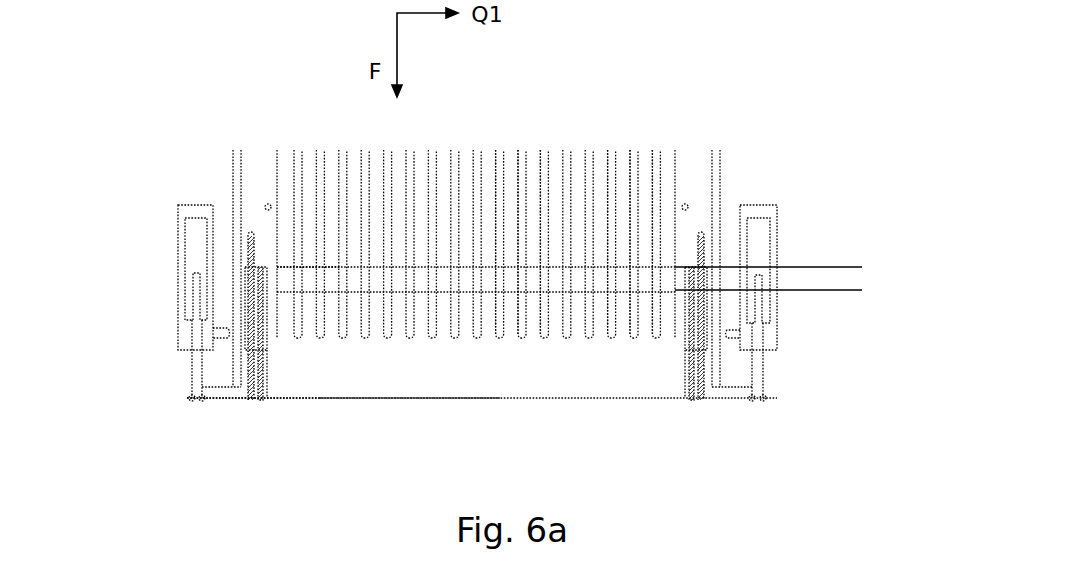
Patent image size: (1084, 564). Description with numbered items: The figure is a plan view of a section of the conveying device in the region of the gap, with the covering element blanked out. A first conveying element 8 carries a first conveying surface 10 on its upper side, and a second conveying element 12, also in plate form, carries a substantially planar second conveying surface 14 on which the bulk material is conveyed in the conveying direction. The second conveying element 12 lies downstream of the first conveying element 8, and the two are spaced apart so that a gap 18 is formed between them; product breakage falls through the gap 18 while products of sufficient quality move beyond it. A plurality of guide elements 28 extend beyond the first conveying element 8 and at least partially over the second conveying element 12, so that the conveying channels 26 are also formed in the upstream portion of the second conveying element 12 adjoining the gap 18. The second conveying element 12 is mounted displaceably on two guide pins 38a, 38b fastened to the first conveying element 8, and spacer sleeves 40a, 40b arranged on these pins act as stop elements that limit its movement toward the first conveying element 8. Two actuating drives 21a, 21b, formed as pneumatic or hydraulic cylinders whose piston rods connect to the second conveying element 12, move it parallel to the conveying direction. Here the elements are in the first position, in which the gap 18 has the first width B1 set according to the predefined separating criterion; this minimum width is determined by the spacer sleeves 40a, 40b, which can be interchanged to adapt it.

The first conveying element 8 is at (232, 158).
The first conveying surface 10 is at (313, 159).
The second conveying element 12 is at (280, 398).
The second conveying surface 14 is at (342, 378).
The gap 18 is at (300, 277).
The conveying channels 26 is at (488, 168).
The guide elements 28 is at (612, 168).
The actuating drive 21a is at (185, 333).
The actuating drive 21b is at (767, 337).
The guide pin 38a is at (253, 322).
The guide pin 38b is at (697, 342).
The spacer sleeve 40a is at (243, 278).
The spacer sleeve 40b is at (710, 278).
The first width B1 is at (853, 245).